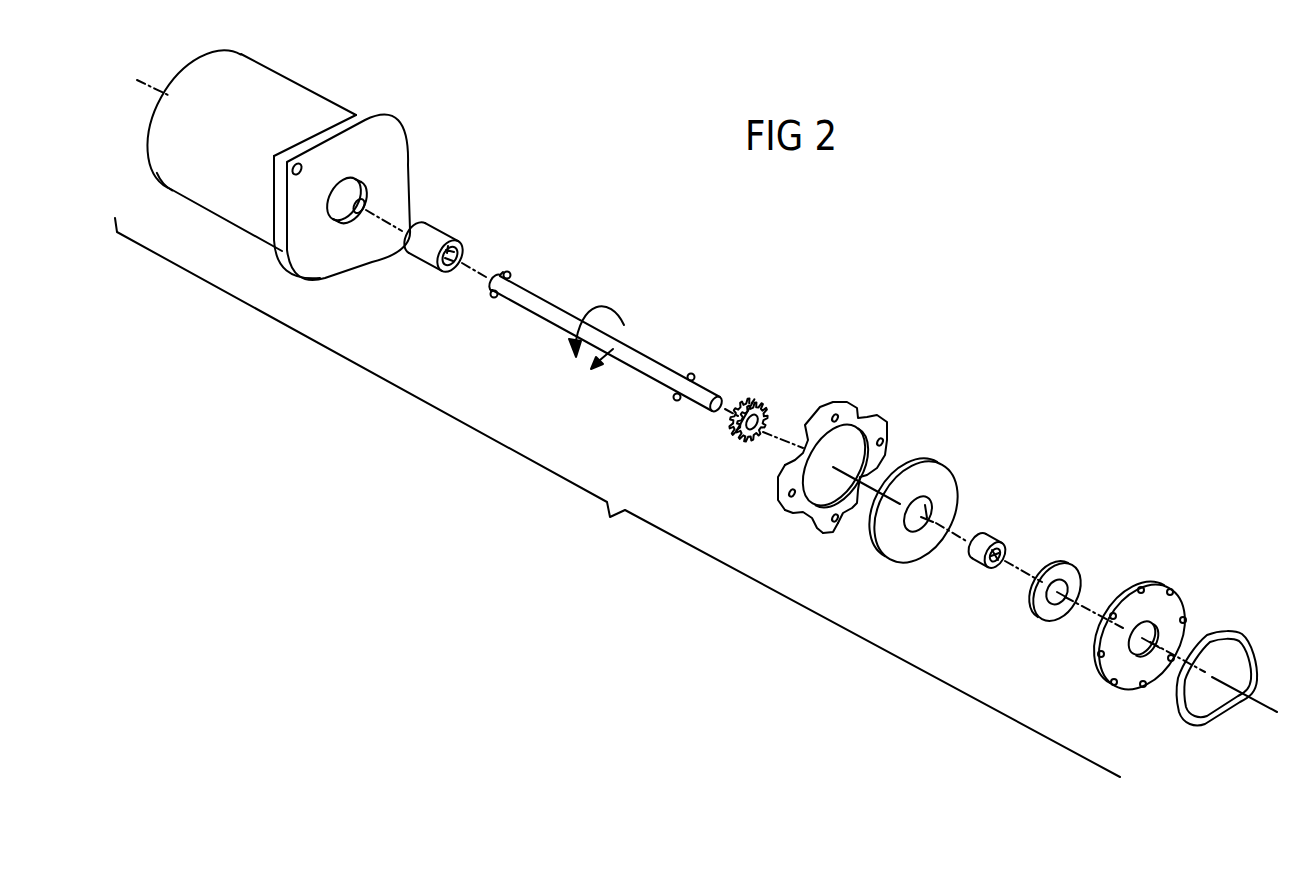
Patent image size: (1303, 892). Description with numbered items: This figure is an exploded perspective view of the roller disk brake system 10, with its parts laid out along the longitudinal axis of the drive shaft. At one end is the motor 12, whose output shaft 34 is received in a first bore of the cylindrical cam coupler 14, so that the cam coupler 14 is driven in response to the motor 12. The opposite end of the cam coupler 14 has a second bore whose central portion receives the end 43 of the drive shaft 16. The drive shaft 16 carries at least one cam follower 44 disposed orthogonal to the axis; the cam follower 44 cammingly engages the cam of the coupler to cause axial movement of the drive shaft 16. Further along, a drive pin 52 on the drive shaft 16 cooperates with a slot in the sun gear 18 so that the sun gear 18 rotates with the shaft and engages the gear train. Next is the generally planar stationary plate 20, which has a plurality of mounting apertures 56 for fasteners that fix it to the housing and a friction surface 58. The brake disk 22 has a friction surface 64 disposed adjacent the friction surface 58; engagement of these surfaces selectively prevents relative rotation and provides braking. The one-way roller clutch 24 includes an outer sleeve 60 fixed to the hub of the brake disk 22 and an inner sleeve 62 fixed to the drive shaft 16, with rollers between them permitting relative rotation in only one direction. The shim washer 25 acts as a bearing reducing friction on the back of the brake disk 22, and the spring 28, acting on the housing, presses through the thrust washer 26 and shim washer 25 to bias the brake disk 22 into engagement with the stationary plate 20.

The roller disk brake system 10 is at (568, 167).
The motor 12 is at (327, 92).
The output shaft 34 is at (362, 198).
The cam coupler 14 is at (447, 230).
The drive shaft 16 is at (653, 357).
The end 43 is at (497, 270).
The cam follower 44 is at (510, 273).
The drive pin 52 is at (673, 400).
The sun gear 18 is at (754, 402).
The stationary plate 20 is at (878, 416).
The friction surface 58 is at (783, 512).
The mounting apertures 56 is at (826, 528).
The brake disk 22 is at (948, 462).
The friction surface 64 is at (880, 547).
The roller clutch 24 is at (998, 542).
The outer sleeve 60 is at (970, 558).
The inner sleeve 62 is at (996, 567).
The shim washer 25 is at (1077, 567).
The thrust washer 26 is at (1160, 585).
The spring 28 is at (1173, 707).